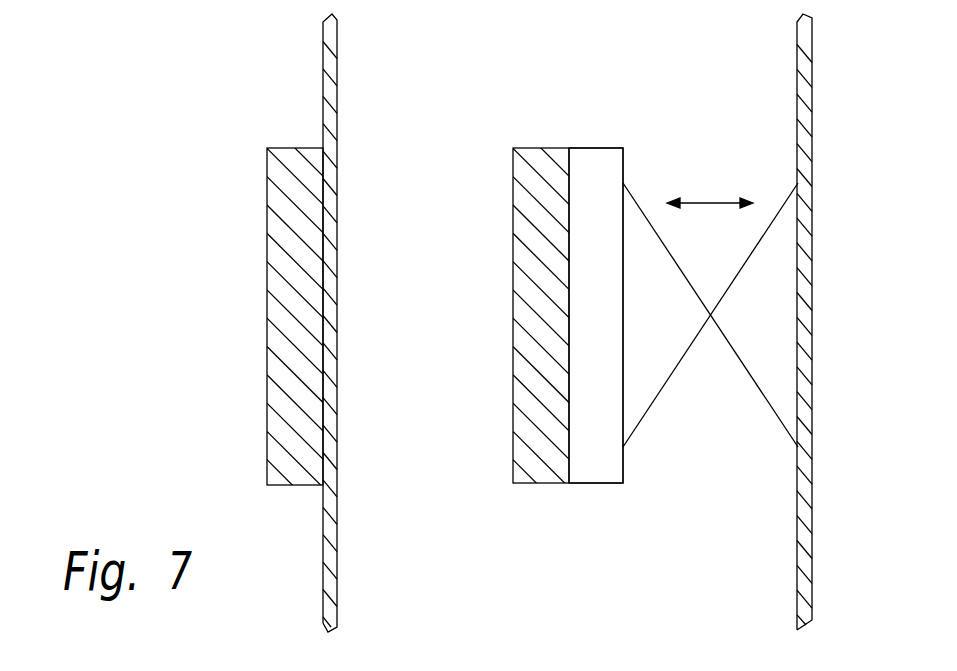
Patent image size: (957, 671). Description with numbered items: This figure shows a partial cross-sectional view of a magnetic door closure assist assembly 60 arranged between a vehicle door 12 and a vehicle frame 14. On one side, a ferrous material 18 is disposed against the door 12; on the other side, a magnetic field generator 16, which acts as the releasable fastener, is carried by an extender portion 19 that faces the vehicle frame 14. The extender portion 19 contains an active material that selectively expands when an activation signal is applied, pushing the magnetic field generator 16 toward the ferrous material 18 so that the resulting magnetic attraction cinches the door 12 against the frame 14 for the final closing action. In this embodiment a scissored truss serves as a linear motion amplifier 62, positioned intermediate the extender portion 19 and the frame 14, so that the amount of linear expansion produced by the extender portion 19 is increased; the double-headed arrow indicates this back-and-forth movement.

The assembly 60 is at (186, 88).
The vehicle door 12 is at (337, 97).
The vehicle frame 14 is at (813, 247).
The magnetic field generator 16 is at (534, 483).
The ferrous material 18 is at (267, 243).
The extender portion 19 is at (597, 148).
The linear motion amplifier 62 is at (712, 330).